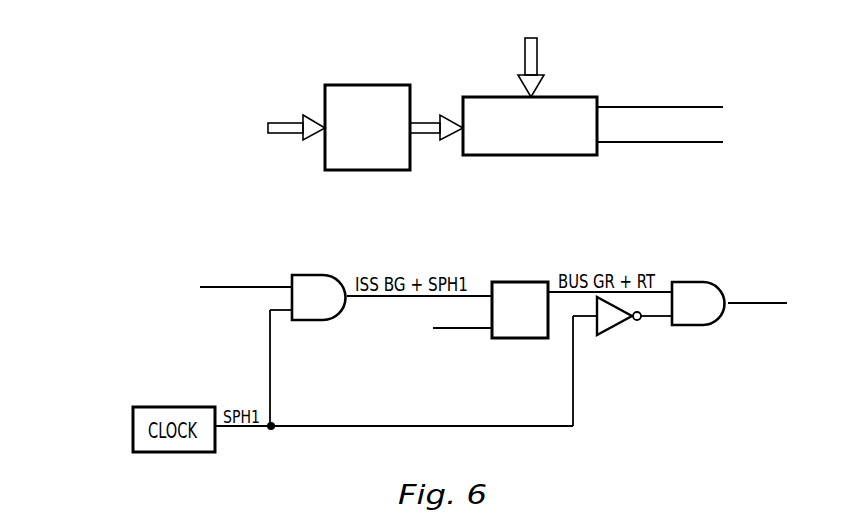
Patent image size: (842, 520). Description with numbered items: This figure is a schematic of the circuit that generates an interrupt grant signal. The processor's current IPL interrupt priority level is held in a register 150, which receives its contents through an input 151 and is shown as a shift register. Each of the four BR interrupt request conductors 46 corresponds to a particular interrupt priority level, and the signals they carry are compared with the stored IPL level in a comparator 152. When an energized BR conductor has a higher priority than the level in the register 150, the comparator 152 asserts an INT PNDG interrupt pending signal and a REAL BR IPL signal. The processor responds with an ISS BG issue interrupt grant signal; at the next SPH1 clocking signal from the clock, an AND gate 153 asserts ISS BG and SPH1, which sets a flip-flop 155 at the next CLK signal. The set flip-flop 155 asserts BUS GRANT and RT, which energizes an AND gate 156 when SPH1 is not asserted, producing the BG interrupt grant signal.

The BR interrupt request conductors 46 is at (537, 60).
The IPL register 150 is at (351, 85).
The input to shift register 151 is at (284, 121).
The comparator 152 is at (593, 135).
The AND gate 153 is at (317, 275).
The flip-flop 155 is at (524, 282).
The AND gate 156 is at (699, 282).